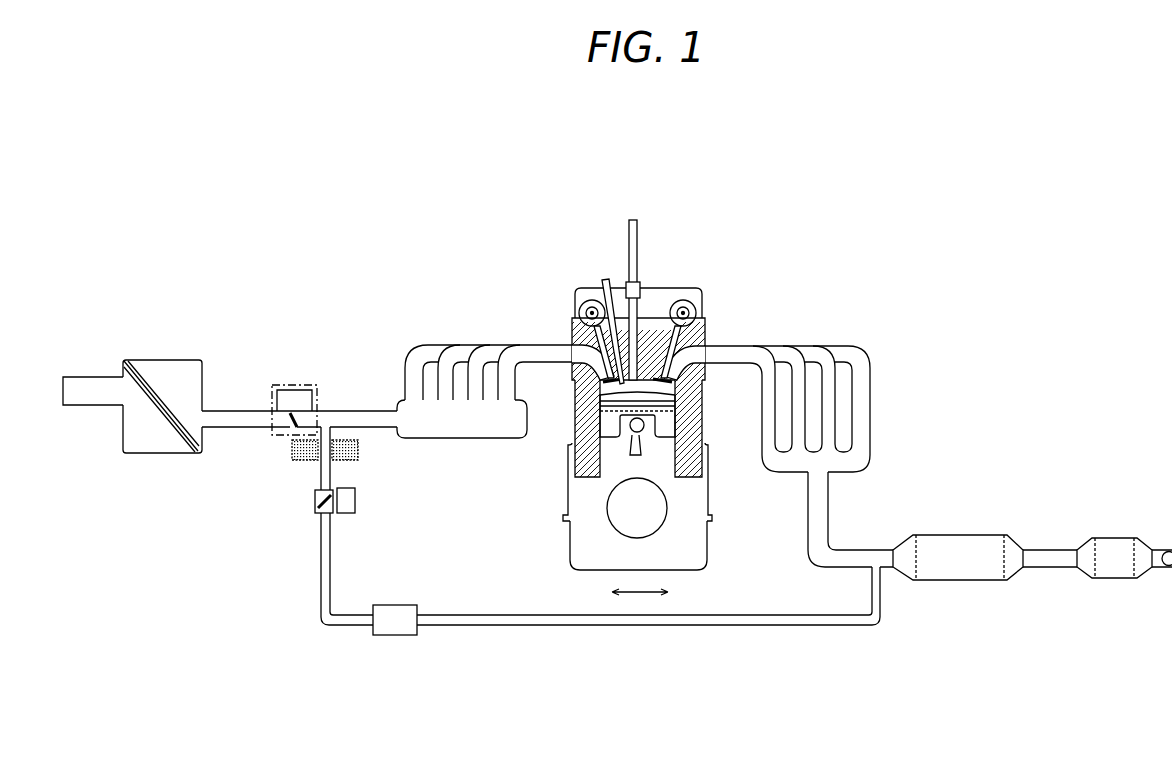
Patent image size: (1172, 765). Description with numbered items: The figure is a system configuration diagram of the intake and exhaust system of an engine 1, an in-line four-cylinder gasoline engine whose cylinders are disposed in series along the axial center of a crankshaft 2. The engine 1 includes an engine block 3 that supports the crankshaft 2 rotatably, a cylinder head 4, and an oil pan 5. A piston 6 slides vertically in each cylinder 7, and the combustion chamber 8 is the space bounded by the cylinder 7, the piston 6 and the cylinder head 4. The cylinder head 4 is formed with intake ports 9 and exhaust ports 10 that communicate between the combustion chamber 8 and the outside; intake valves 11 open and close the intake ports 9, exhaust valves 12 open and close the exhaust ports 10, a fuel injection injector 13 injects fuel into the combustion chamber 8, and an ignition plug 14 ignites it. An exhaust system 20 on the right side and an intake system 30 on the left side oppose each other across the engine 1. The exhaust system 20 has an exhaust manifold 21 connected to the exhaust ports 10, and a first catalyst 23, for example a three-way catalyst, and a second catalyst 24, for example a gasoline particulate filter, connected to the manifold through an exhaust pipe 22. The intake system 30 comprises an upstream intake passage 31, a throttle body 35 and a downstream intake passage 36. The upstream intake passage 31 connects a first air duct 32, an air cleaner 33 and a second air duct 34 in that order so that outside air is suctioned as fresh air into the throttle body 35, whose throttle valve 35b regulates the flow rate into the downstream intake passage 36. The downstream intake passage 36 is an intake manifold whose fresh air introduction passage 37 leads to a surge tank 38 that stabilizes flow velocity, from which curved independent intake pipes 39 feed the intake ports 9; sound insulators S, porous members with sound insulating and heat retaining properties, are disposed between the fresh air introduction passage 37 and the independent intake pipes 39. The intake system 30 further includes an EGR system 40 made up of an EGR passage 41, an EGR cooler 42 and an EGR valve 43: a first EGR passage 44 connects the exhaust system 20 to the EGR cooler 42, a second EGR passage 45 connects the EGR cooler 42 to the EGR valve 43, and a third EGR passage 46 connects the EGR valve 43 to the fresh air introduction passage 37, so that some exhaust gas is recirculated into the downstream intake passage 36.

The engine 1 is at (664, 270).
The crankshaft 2 is at (600, 498).
The engine block 3 is at (700, 507).
The cylinder head 4 is at (710, 370).
The oil pan 5 is at (697, 540).
The piston 6 is at (613, 432).
The cylinder 7 is at (660, 456).
The combustion chamber 8 is at (641, 394).
The intake port 9 is at (568, 383).
The exhaust port 10 is at (710, 355).
The intake valve 11 is at (578, 338).
The exhaust valve 12 is at (656, 340).
The fuel injection injector 13 is at (628, 232).
The ignition plug 14 is at (606, 292).
The exhaust system 20 is at (858, 340).
The exhaust manifold 21 is at (870, 407).
The exhaust pipe 22 is at (828, 508).
The first catalyst 23 is at (945, 535).
The second catalyst 24 is at (1105, 537).
The intake system 30 is at (413, 340).
The upstream intake passage 31 is at (176, 383).
The first air duct 32 is at (84, 376).
The air cleaner 33 is at (165, 360).
The second air duct 34 is at (228, 411).
The throttle body 35 is at (300, 385).
The throttle valve 35b is at (289, 413).
The downstream intake passage 36 is at (434, 394).
The fresh air introduction passage 37 is at (357, 411).
The surge tank 38 is at (460, 440).
The independent intake pipe 39 is at (480, 345).
The EGR system 40 is at (703, 627).
The EGR passage 41 is at (556, 575).
The EGR cooler 42 is at (393, 636).
The EGR valve 43 is at (315, 505).
The first EGR passage 44 is at (813, 627).
The second EGR passage 45 is at (321, 597).
The third EGR passage 46 is at (331, 480).
The sound insulator S is at (300, 461).